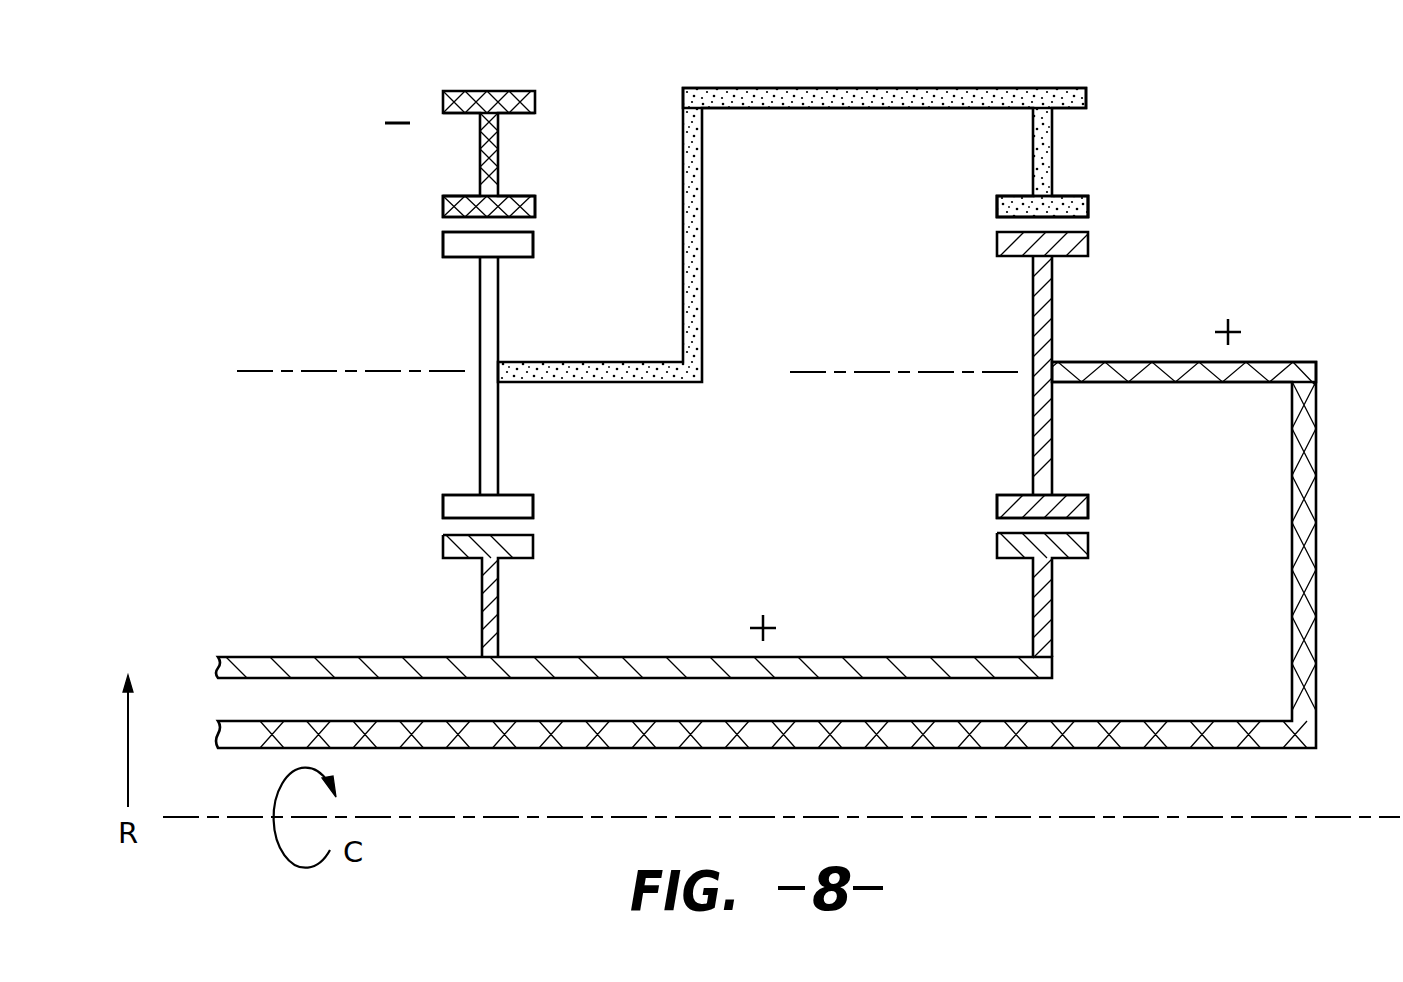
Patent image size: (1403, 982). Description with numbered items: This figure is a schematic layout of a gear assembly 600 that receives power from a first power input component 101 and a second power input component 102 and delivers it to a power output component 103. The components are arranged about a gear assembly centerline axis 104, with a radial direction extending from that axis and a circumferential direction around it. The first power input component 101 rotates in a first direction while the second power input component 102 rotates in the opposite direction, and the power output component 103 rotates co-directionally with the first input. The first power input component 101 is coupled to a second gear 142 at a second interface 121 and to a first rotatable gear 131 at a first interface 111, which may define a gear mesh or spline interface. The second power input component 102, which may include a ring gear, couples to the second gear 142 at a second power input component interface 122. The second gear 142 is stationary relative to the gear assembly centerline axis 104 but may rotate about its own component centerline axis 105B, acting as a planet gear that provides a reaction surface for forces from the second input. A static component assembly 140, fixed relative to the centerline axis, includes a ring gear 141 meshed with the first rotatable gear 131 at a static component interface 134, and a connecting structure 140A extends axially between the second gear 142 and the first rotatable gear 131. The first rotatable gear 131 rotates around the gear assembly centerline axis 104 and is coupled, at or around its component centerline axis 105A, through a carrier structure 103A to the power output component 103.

The gear assembly 600 is at (1197, 100).
The first power input component 101 is at (695, 658).
The second power input component 102 is at (500, 160).
The power output component 103 is at (848, 750).
The carrier structure 103A is at (1200, 382).
The gear assembly centerline axis 104 is at (533, 817).
The component centerline axis 105A is at (940, 372).
The component centerline axis 105B is at (385, 372).
The first interface 111 is at (1088, 525).
The second interface 121 is at (535, 527).
The second power input component interface 122 is at (443, 224).
The first rotatable gear 131 is at (1033, 438).
The static component interface 134 is at (1090, 224).
The static component assembly 140 is at (897, 108).
The connecting structure 140A is at (735, 70).
The first gear 141 is at (1090, 205).
The second gear 142 is at (478, 443).